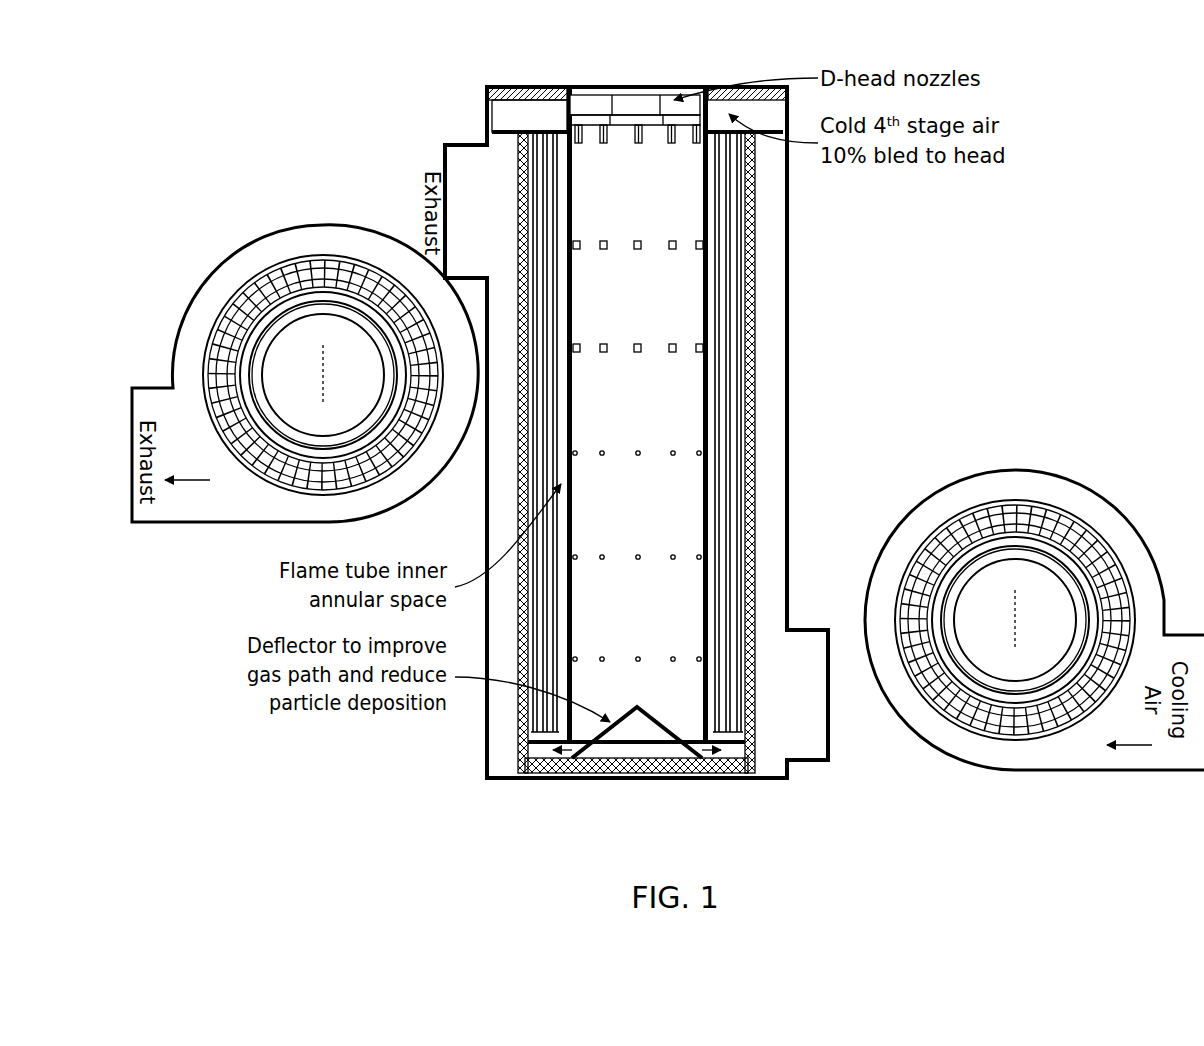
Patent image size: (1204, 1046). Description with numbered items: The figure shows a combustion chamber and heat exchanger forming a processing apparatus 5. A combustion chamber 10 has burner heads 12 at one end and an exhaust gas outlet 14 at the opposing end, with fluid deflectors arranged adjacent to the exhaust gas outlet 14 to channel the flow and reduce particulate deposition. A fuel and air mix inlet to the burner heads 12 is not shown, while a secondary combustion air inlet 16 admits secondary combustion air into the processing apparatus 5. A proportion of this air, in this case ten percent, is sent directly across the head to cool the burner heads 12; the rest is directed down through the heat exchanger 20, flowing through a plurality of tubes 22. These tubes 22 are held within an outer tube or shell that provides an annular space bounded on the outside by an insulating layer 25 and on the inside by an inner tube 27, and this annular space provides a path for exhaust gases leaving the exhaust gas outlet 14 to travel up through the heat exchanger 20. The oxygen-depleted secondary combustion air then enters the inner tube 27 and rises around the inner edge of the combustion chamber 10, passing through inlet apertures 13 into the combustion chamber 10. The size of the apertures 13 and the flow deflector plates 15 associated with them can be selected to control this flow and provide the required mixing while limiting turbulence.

The processing apparatus 5 is at (672, 62).
The combustion chamber 10 is at (663, 414).
The burner heads 12 is at (617, 145).
The inlet apertures 13 is at (673, 458).
The exhaust gas outlet 14 is at (580, 742).
The flow deflector plates 15 is at (699, 253).
The secondary combustion air inlet 16 is at (487, 118).
The heat exchanger 20 is at (522, 776).
The tubes 22 is at (536, 322).
The insulating layer 25 is at (520, 468).
The inner tube 27 is at (570, 412).